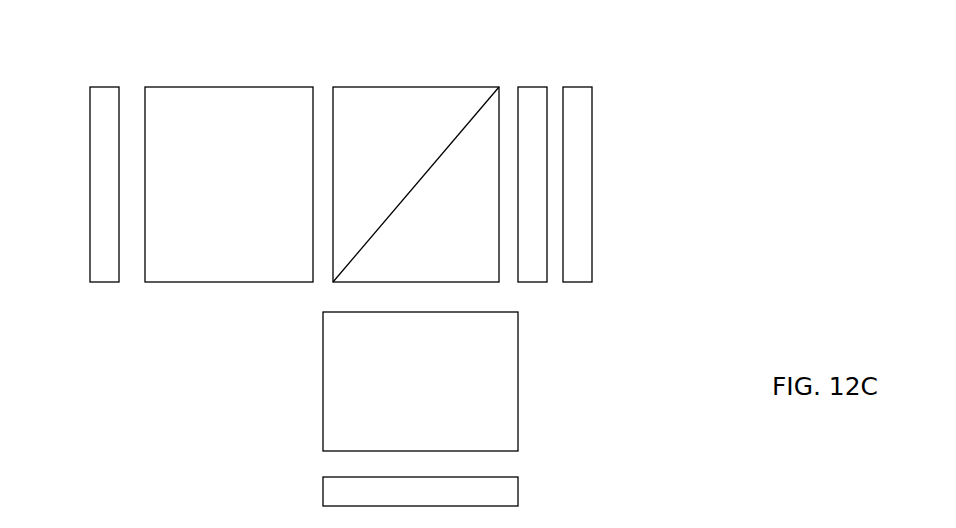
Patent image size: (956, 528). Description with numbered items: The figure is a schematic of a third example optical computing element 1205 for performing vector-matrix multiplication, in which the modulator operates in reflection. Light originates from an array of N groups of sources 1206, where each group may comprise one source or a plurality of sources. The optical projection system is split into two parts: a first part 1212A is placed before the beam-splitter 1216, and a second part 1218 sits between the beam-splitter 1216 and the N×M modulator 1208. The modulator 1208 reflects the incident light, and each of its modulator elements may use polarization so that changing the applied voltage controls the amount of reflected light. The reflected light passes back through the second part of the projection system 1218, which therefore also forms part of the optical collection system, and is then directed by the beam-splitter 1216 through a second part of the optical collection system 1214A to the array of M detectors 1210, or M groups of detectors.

The optical computing element 1205 is at (758, 187).
The array of N groups of sources 1206 is at (107, 292).
The N×M modulator 1208 is at (602, 255).
The array of M detectors 1210 is at (527, 492).
The first part of the optical projection system 1212A is at (227, 292).
The second part of the optical collection system 1214A is at (527, 387).
The beam-splitter 1216 is at (405, 87).
The second part of the optical projection system 1218 is at (537, 82).